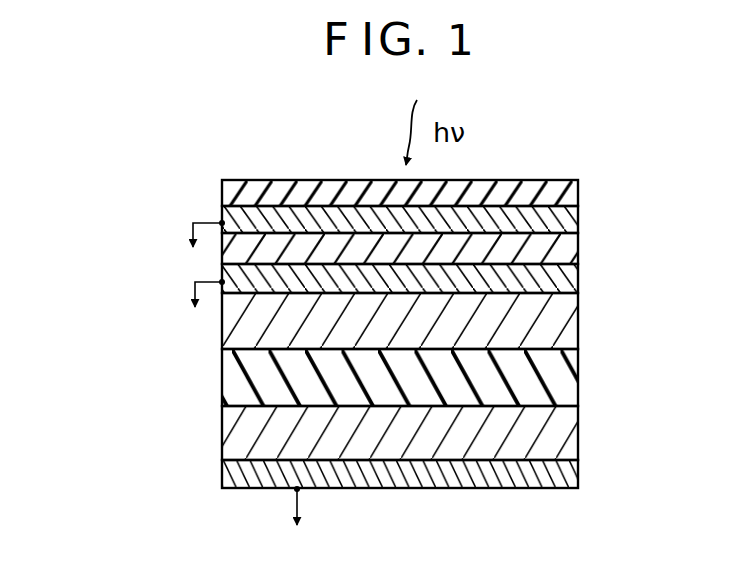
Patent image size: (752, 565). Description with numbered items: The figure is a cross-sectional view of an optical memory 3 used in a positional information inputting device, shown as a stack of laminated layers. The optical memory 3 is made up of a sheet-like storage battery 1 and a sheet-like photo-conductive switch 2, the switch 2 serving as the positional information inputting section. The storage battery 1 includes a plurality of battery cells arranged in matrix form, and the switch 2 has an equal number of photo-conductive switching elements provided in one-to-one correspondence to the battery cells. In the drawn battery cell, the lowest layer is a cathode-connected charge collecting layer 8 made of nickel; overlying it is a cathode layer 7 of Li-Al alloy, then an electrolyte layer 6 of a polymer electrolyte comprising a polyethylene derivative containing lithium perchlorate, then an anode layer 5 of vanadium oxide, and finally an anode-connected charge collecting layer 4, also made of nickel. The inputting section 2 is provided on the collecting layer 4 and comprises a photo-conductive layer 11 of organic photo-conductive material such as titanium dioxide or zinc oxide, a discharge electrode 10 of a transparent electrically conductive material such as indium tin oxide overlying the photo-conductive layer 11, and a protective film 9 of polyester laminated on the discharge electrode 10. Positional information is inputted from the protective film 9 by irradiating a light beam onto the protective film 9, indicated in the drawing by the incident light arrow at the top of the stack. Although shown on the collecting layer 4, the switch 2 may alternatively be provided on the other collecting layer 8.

The storage battery 1 is at (185, 270).
The photo-conductive switch 2 is at (185, 182).
The optical memory 3 is at (112, 228).
The anode-connected charge collecting layer 4 is at (578, 277).
The anode layer 5 is at (578, 317).
The electrolyte layer 6 is at (578, 363).
The cathode layer 7 is at (578, 420).
The cathode-connected charge collecting layer 8 is at (578, 468).
The protective film 9 is at (578, 185).
The discharge electrode 10 is at (578, 223).
The photo-conductive layer 11 is at (578, 253).